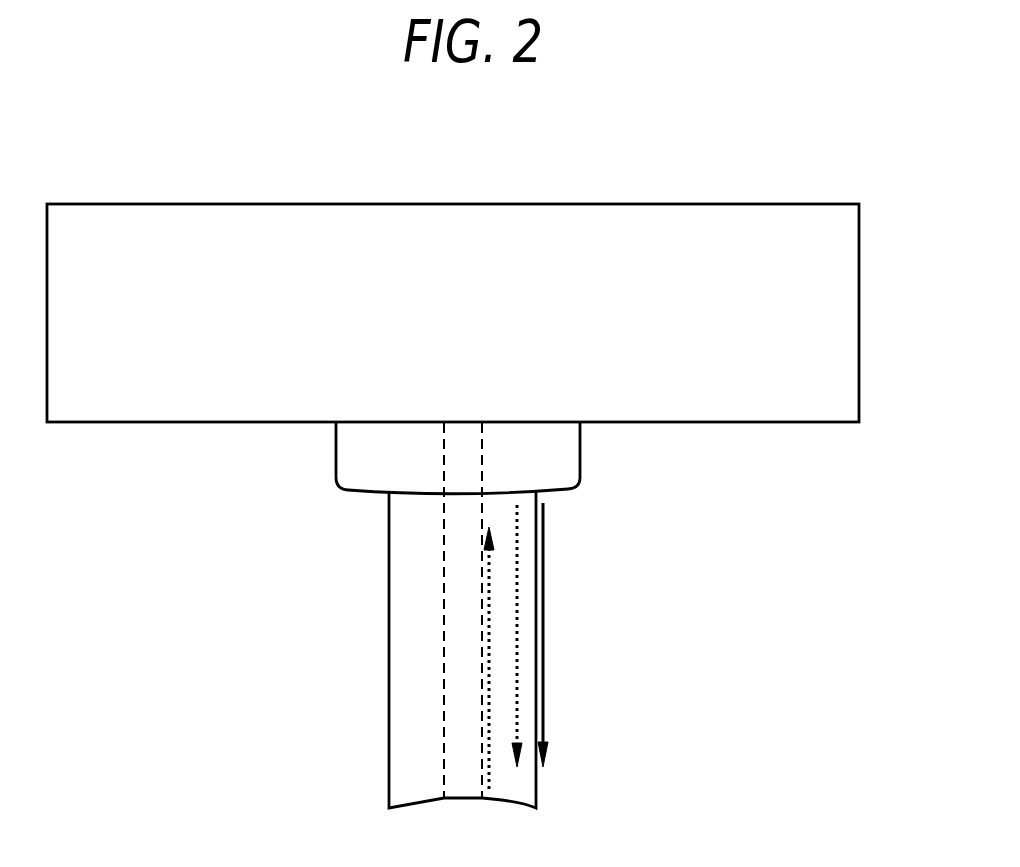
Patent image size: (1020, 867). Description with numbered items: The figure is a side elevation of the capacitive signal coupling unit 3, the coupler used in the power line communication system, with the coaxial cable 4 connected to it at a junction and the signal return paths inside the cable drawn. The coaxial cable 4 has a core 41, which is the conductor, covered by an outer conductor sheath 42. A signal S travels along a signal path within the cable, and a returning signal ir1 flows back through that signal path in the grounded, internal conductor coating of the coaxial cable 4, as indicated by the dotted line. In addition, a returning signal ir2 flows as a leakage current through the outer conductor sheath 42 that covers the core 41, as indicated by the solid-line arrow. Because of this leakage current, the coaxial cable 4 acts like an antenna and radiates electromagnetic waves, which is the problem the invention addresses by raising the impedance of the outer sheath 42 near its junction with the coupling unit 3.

The capacitive signal coupling unit 3 is at (818, 352).
The coaxial cable 4 is at (402, 543).
The core 41 is at (443, 607).
The outer conductor sheath 42 is at (389, 667).
The signal S is at (487, 665).
The returning signal ir1 is at (517, 703).
The returning signal ir2 is at (545, 672).